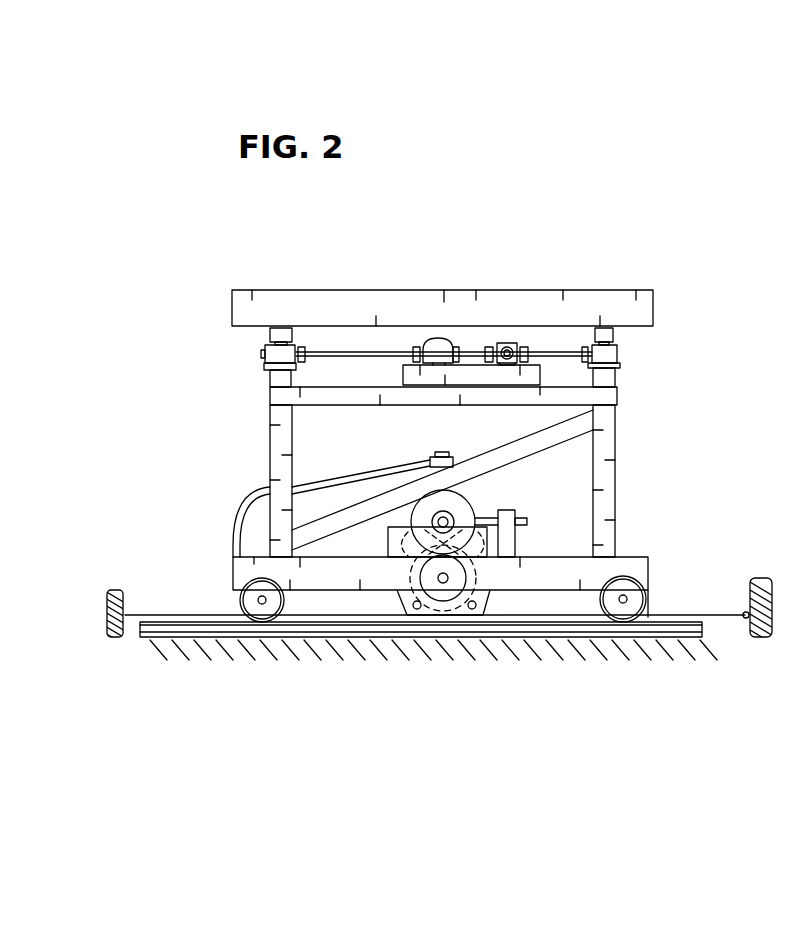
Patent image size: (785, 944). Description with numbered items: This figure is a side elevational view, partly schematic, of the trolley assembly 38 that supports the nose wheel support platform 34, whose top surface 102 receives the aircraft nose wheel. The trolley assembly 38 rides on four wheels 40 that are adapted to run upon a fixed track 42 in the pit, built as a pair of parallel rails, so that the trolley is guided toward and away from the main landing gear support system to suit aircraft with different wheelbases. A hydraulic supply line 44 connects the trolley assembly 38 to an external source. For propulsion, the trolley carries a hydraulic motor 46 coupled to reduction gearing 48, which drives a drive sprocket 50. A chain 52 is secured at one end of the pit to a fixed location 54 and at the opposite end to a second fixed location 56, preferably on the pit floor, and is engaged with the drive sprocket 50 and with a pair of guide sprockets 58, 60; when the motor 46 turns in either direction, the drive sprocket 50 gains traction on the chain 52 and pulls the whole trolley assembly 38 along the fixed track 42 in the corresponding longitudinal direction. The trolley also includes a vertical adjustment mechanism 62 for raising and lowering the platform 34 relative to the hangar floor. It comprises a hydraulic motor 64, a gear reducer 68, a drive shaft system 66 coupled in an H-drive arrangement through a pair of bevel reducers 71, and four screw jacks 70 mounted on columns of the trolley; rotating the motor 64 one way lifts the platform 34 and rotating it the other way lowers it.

The trolley assembly 38 is at (210, 315).
The top surface 102 is at (443, 276).
The nose wheel support platform 34 is at (525, 276).
The vertical adjustment mechanism 62 is at (398, 325).
The drive shaft system 66 is at (372, 352).
The hydraulic motor 64 is at (440, 340).
The gear reducer 68 is at (486, 347).
The bevel reducers 71 is at (512, 346).
The screw jacks 70 is at (272, 347).
The hydraulic supply line 44 is at (243, 503).
The reduction gearing 48 is at (490, 495).
The hydraulic motor 46 is at (387, 562).
The guide sprocket 60 is at (480, 613).
The drive sprocket 50 is at (442, 613).
The guide sprocket 58 is at (413, 613).
The wheels 40 is at (245, 600).
The fixed track 42 is at (193, 637).
The fixed location 54 is at (113, 590).
The chain 52 is at (705, 617).
The fixed location 56 is at (772, 637).